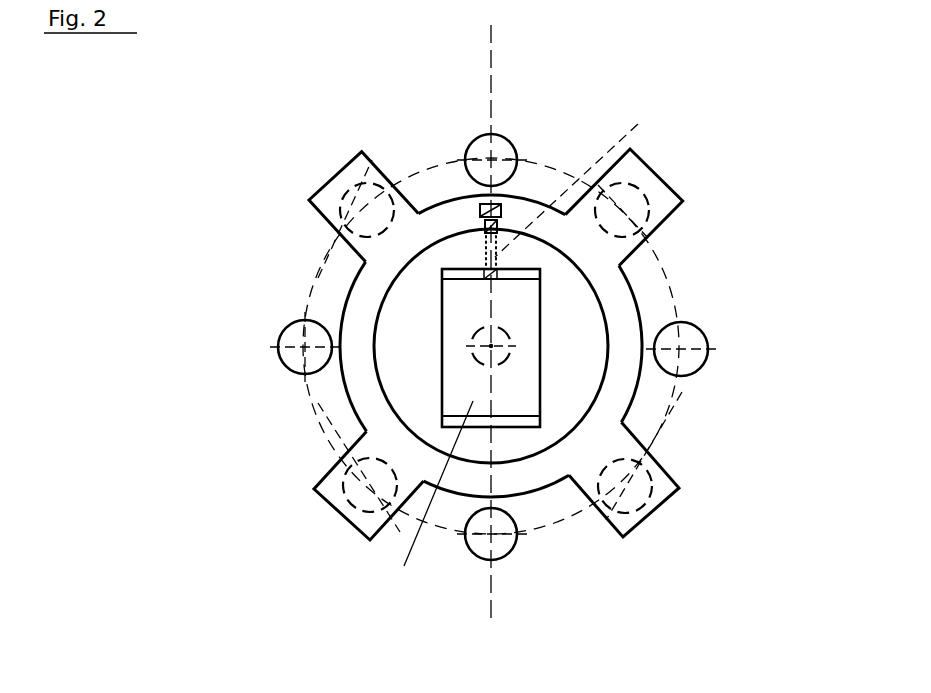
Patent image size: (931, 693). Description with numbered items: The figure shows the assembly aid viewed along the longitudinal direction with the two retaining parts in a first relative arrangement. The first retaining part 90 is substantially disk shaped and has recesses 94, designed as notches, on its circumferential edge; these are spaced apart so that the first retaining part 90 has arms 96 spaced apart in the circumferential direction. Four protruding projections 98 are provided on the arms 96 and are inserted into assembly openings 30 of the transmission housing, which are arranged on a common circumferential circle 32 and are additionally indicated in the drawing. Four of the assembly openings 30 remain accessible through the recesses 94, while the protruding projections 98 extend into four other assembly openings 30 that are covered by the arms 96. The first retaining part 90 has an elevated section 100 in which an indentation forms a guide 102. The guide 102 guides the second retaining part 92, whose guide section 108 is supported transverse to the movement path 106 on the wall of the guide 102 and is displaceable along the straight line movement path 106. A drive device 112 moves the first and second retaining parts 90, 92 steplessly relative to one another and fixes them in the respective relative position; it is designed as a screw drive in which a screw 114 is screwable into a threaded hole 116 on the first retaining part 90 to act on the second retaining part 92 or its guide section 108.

The assembly openings 30 is at (472, 140).
The circumferential circle 32 is at (672, 281).
The first retaining part 90 is at (645, 390).
The second retaining part 92 is at (428, 402).
The recesses 94 is at (530, 130).
The arms 96 is at (362, 150).
The protruding projections 98 is at (400, 245).
The elevated section 100 is at (575, 300).
The guide 102 is at (510, 419).
The movement path 106 is at (487, 63).
The guide section 108 is at (420, 497).
The drive device 112 is at (463, 258).
The screw 114 is at (494, 208).
The threaded hole 116 is at (582, 176).